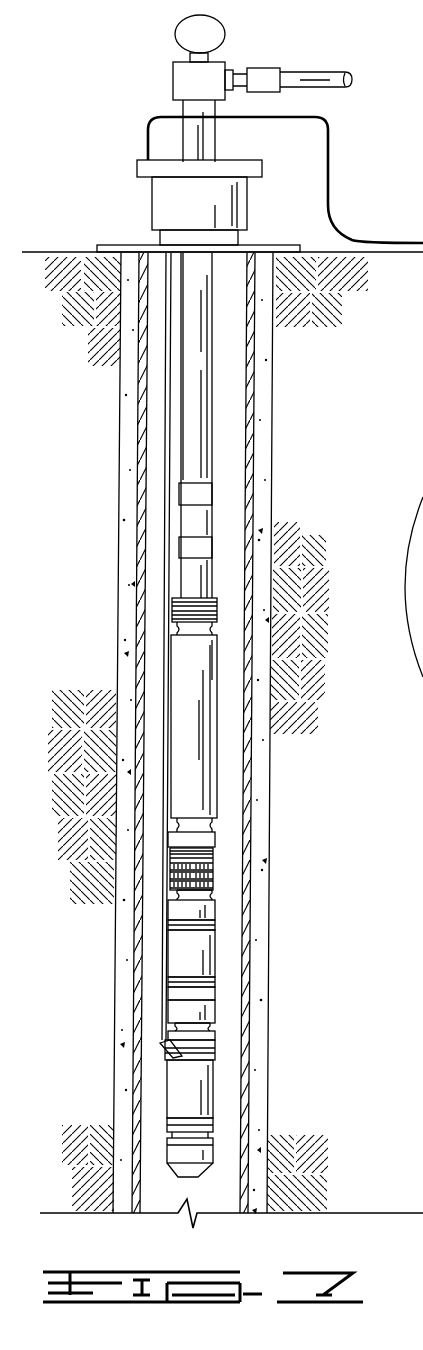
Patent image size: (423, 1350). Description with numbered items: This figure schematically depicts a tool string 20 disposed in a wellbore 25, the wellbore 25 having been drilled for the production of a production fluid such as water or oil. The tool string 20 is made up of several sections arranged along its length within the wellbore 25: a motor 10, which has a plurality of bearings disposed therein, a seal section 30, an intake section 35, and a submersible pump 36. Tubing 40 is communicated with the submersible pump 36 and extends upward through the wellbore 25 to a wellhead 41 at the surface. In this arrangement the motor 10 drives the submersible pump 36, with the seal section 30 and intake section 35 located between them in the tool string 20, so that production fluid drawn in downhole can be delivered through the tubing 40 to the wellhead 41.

The motor 10 is at (173, 1092).
The tool string 20 is at (183, 695).
The wellbore 25 is at (233, 463).
The seal section 30 is at (213, 953).
The intake section 35 is at (207, 876).
The submersible pump 36 is at (197, 748).
The tubing 40 is at (185, 580).
The wellhead 41 is at (150, 193).